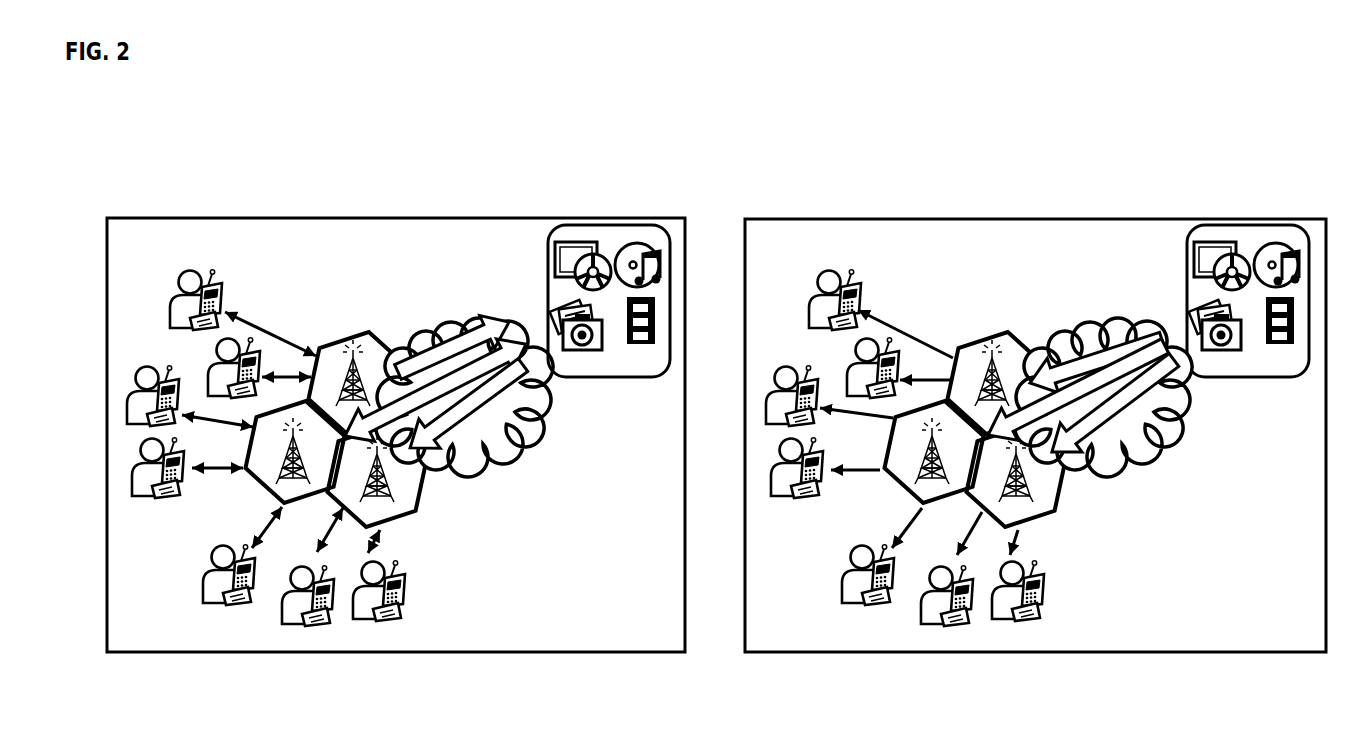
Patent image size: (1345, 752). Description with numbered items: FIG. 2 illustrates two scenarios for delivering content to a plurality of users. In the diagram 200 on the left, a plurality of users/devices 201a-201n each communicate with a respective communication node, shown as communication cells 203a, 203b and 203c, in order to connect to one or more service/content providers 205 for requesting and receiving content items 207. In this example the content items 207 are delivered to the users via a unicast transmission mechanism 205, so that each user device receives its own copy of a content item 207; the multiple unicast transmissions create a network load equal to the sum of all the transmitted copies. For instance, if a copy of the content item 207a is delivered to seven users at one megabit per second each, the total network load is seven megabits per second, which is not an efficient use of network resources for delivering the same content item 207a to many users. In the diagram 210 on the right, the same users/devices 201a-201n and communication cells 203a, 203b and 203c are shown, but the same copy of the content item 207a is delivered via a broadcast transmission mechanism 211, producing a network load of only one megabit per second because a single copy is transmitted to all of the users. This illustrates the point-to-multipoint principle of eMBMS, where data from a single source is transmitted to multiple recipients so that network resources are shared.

The diagram 200 is at (401, 203).
The user/device 201a is at (190, 262).
The user/device 201n is at (405, 623).
The communication cell 203a is at (360, 335).
The communication cell 203b is at (280, 500).
The communication cell 203c is at (406, 521).
The service/content providers 205 is at (477, 320).
The content items 207 is at (610, 380).
The content item 207a is at (640, 346).
The diagram 210 is at (1045, 203).
The broadcast transmission mechanism 211 is at (1086, 370).